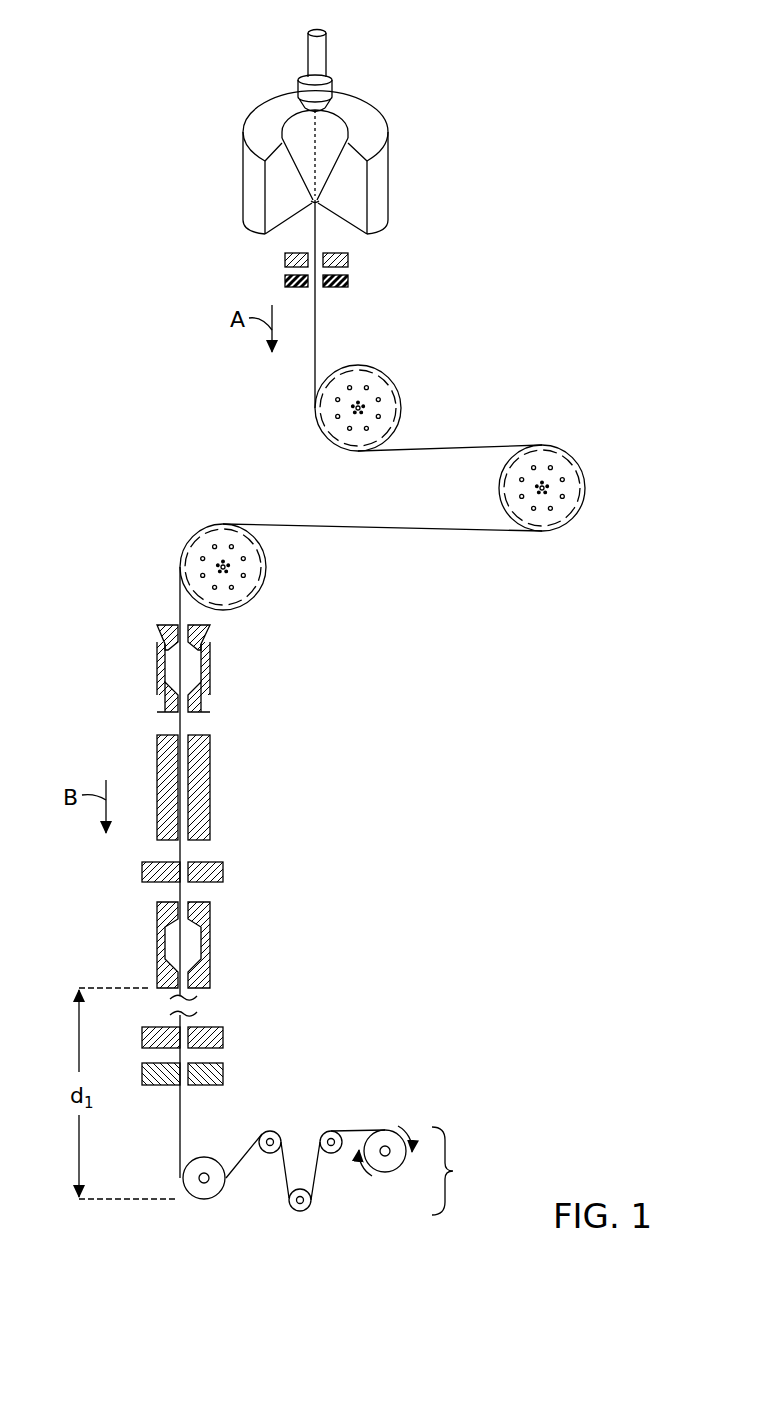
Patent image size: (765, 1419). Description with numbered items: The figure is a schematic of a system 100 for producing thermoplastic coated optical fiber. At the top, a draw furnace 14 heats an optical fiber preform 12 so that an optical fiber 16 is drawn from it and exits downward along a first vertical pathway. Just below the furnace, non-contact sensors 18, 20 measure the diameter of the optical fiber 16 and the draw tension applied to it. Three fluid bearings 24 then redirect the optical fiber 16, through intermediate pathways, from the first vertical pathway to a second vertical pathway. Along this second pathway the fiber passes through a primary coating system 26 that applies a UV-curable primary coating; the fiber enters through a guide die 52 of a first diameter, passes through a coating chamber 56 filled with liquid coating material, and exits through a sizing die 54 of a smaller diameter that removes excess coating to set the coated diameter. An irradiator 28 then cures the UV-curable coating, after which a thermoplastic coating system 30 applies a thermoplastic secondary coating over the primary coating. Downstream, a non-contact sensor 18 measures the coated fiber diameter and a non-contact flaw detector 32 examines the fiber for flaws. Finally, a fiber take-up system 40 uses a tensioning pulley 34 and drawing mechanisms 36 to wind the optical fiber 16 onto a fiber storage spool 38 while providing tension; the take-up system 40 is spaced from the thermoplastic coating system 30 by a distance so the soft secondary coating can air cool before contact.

The system for producing thermoplastic coated optical fiber 100 is at (560, 44).
The optical fiber preform 12 is at (340, 53).
The draw furnace 14 is at (405, 163).
The optical fiber 16 is at (305, 228).
The non-contact sensor 18 is at (348, 262).
The non-contact sensor 20 is at (348, 282).
The fluid bearing 24 is at (400, 393).
The primary coating system 26 is at (214, 652).
The irradiator 28 is at (228, 782).
The thermoplastic coating system 30 is at (228, 950).
The non-contact flaw detector 32 is at (223, 1074).
The tensioning pulley 34 is at (213, 1208).
The drawing mechanism 36 is at (270, 1153).
The fiber storage spool 38 is at (397, 1180).
The fiber take-up system 40 is at (462, 1171).
The guide die 52 is at (160, 625).
The sizing die 54 is at (160, 713).
The coating chamber 56 is at (165, 668).